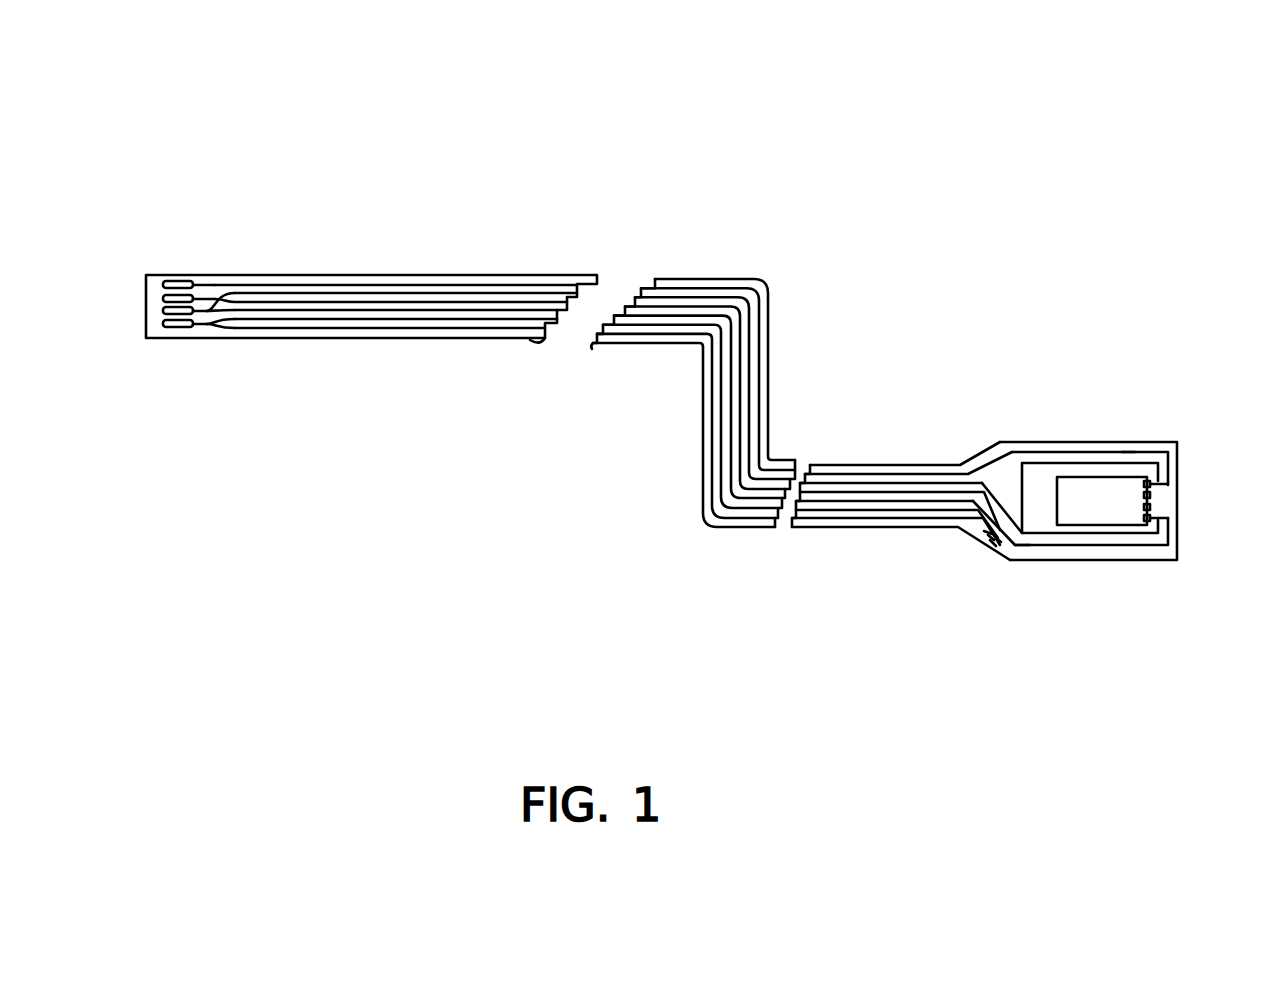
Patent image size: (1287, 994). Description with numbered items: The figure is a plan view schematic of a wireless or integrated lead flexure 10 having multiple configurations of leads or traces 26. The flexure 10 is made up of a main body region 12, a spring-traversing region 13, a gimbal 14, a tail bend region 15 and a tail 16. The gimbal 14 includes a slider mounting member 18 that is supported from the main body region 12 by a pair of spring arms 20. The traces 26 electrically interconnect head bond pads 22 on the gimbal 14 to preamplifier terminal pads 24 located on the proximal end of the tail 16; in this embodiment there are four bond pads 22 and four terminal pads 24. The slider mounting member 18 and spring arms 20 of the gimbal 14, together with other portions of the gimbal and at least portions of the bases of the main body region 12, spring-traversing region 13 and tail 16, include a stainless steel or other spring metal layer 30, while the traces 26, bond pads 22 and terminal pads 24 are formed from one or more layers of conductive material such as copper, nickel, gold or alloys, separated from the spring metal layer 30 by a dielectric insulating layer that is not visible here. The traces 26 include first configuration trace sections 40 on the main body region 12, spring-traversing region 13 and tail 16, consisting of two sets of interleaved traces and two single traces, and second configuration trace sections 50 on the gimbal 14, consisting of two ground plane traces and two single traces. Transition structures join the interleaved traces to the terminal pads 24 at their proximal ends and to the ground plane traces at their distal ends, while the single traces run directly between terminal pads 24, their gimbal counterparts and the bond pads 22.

The integrated lead flexure 10 is at (953, 348).
The main body region 12 is at (903, 467).
The spring-traversing region 13 is at (865, 467).
The gimbal 14 is at (1045, 437).
The tail bend region 15 is at (707, 277).
The tail 16 is at (546, 279).
The slider mounting member 18 is at (1093, 513).
The spring arms 20 is at (1160, 440).
The head bond pads 22 is at (1150, 483).
The preamplifier terminal pads 24 is at (163, 296).
The traces 26 is at (516, 318).
The spring metal layer 30 is at (990, 537).
The first configuration trace sections 40 is at (823, 513).
The second configuration trace sections 50 is at (1005, 467).